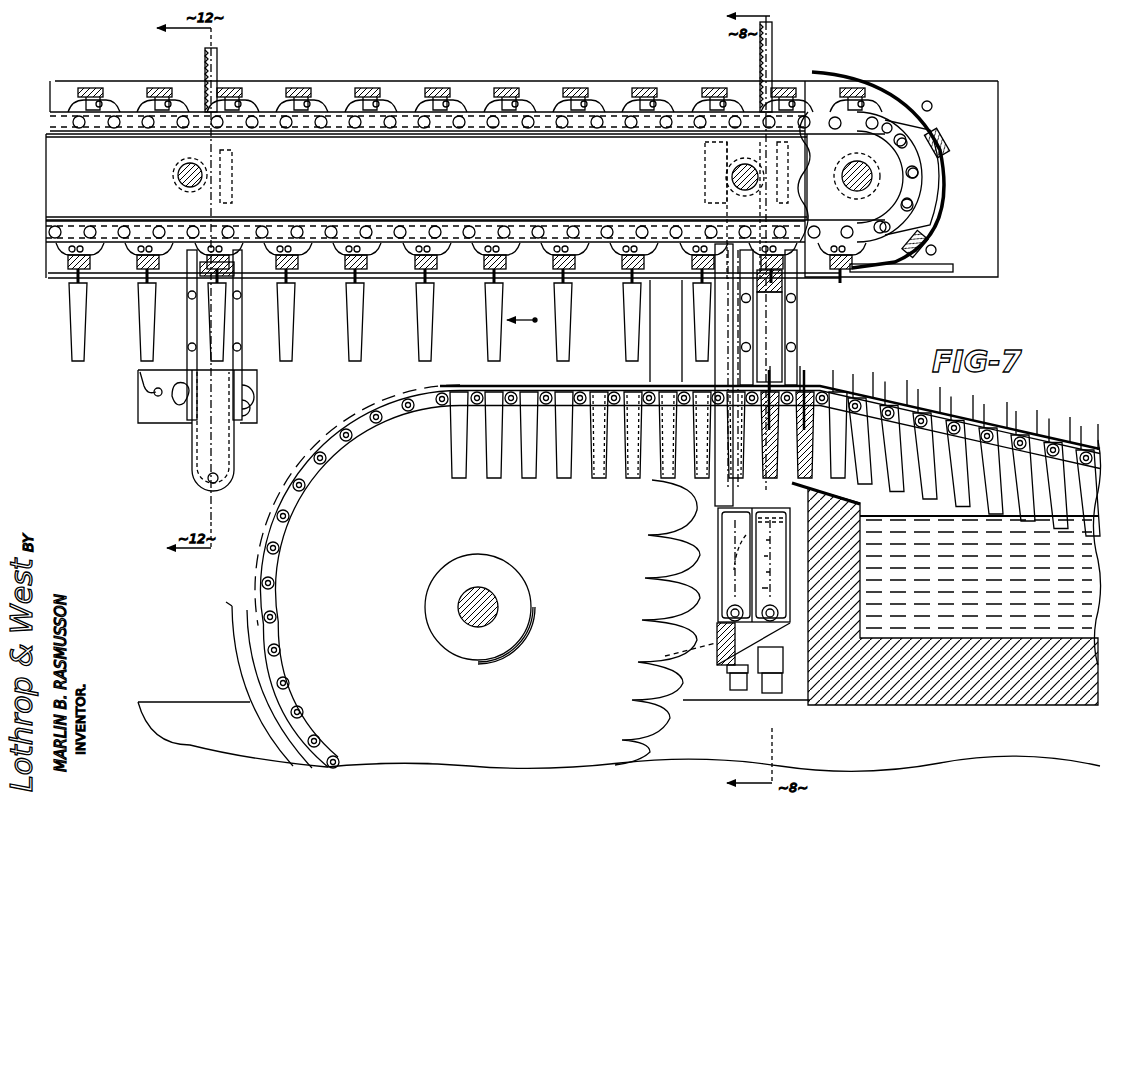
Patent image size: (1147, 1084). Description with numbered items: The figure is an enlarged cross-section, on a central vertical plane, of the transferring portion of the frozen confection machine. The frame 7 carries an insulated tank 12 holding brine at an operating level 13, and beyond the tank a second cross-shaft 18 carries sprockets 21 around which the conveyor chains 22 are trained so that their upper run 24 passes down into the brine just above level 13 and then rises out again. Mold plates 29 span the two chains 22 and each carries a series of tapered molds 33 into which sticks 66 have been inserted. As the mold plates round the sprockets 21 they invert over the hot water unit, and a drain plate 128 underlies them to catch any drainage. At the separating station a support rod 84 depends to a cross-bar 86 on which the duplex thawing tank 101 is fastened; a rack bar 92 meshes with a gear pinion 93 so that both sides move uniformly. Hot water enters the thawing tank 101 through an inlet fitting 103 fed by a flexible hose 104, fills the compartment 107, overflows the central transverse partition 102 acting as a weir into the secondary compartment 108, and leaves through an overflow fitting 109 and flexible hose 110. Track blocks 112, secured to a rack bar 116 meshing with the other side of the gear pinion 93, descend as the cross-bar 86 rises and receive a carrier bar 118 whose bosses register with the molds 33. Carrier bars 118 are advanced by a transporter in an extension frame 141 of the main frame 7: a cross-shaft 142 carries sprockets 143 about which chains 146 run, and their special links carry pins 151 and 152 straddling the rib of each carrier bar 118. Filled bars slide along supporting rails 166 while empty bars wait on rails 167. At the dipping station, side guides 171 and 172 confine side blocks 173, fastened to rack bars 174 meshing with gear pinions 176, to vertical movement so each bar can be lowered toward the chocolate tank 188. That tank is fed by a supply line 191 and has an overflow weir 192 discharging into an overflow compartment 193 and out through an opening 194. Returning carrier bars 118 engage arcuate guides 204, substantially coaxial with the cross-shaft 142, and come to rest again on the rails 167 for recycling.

The frame 7 is at (992, 762).
The insulated tank 12 is at (916, 698).
The brine level 13 is at (887, 506).
The second cross-shaft 18 is at (493, 607).
The sprockets 21 is at (384, 559).
The conveyor chains 22 is at (297, 507).
The upper run 24 is at (949, 420).
The mold plates 29 is at (469, 371).
The molds 33 is at (563, 478).
The sticks 66 is at (290, 276).
The support rod 84 is at (715, 492).
The cross-bar 86 is at (730, 660).
The rack bar 92 is at (715, 182).
The gear pinion 93 is at (712, 155).
The duplex thawing tank 101 is at (763, 511).
The central transverse partition 102 is at (752, 567).
The inlet fitting 103 is at (775, 642).
The flexible hose 104 is at (775, 691).
The compartment 107 is at (765, 554).
The secondary compartment 108 is at (722, 547).
The overflow fitting 109 is at (676, 655).
The flexible hose 110 is at (735, 692).
The track blocks 112 is at (772, 276).
The rack bar 116 is at (773, 65).
The carrier bar 118 is at (496, 85).
The drain plate 128 is at (230, 610).
The extension frame 141 is at (557, 185).
The cross-shaft 142 is at (862, 161).
The sprockets 143 is at (860, 217).
The chains 146 is at (308, 222).
The pin 151 is at (383, 100).
The pin 152 is at (357, 102).
The supporting rails 166 is at (116, 270).
The rails 167 is at (913, 272).
The side guide 171 is at (188, 336).
The side guide 172 is at (246, 364).
The side blocks 173 is at (232, 250).
The rack bars 174 is at (217, 72).
The gear pinions 176 is at (180, 166).
The chocolate tank 188 is at (236, 443).
The supply line 191 is at (210, 485).
The overflow weir 192 is at (175, 402).
The overflow compartment 193 is at (140, 386).
The opening 194 is at (156, 397).
The arcuate guides 204 is at (897, 90).